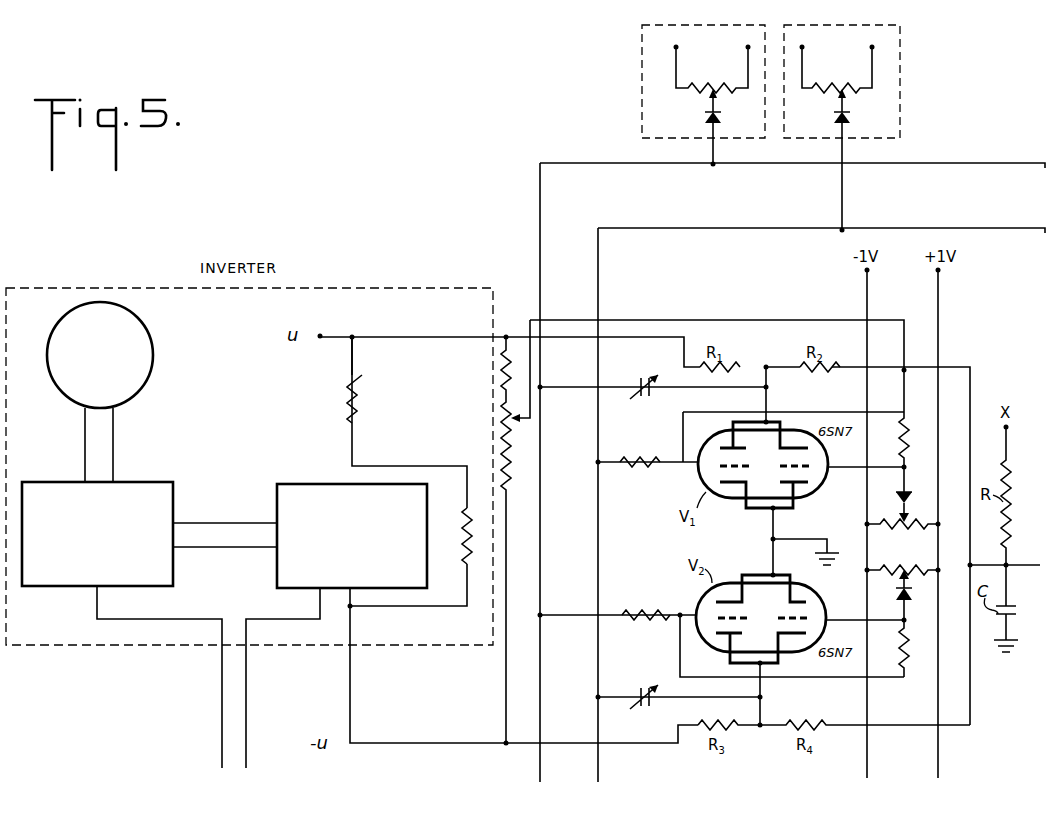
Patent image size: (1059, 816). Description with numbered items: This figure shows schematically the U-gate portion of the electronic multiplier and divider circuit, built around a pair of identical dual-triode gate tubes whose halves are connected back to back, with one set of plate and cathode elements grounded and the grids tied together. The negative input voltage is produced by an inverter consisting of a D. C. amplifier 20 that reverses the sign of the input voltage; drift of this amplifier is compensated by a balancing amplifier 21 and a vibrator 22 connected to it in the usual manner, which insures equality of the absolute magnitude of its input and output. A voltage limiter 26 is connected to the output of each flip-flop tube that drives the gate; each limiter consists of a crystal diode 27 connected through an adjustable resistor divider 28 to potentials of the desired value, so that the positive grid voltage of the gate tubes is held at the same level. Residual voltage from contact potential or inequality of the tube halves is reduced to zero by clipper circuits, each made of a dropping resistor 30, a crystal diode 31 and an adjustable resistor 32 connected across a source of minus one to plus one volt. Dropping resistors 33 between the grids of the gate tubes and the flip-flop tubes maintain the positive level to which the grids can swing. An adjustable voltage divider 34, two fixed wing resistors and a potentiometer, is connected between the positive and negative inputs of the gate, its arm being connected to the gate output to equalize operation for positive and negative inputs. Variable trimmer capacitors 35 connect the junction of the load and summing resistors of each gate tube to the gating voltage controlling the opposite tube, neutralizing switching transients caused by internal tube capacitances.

The D. C. amplifier 20 is at (312, 484).
The balancing amplifier 21 is at (143, 482).
The vibrator 22 is at (152, 392).
The voltage limiter 26 is at (641, 62).
The crystal diode 27 is at (723, 120).
The adjustable resistor divider 28 is at (692, 92).
The dropping resistor 30 is at (902, 442).
The crystal diode 31 is at (888, 603).
The adjustable resistor 32 is at (892, 530).
The dropping resistor 33 is at (643, 465).
The adjustable voltage divider 34 is at (502, 420).
The variable trimmer capacitor 35 is at (648, 376).